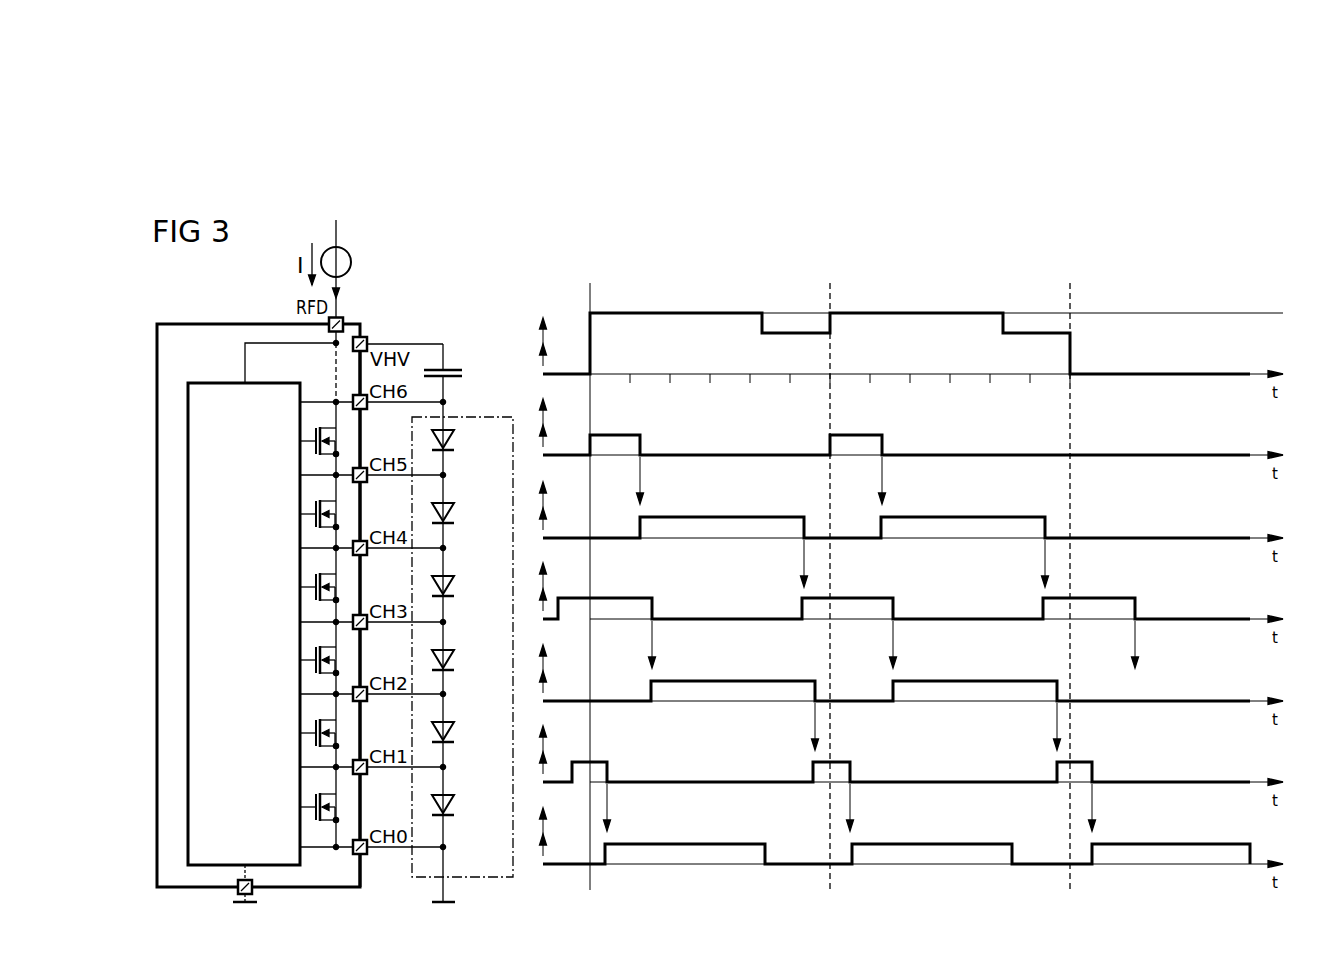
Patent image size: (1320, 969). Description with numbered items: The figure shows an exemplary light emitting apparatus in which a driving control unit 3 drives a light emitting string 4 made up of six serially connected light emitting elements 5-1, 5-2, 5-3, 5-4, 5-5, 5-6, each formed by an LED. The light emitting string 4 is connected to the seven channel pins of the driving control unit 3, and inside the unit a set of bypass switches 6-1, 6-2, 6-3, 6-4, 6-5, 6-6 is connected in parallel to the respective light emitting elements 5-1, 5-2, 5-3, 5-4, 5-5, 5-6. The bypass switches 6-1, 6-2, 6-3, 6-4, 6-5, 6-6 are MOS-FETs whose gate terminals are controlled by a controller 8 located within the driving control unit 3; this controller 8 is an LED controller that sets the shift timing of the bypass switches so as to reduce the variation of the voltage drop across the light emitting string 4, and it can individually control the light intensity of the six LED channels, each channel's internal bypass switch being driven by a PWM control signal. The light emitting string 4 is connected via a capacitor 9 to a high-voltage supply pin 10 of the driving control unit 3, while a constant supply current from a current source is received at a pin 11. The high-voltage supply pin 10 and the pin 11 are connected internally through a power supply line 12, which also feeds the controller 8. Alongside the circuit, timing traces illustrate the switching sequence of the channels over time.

The driving control unit 3 is at (205, 323).
The light emitting string 4 is at (495, 417).
The controller 8 is at (216, 383).
The capacitor 9 is at (447, 369).
The high-voltage supply pin 10 is at (370, 340).
The pin 11 is at (346, 318).
The power supply line 12 is at (263, 343).
The light emitting element 5-1 is at (452, 805).
The light emitting element 5-2 is at (452, 732).
The light emitting element 5-3 is at (452, 660).
The light emitting element 5-4 is at (452, 586).
The light emitting element 5-5 is at (452, 513).
The light emitting element 5-6 is at (452, 440).
The bypass switch 6-1 is at (300, 807).
The bypass switch 6-2 is at (300, 733).
The bypass switch 6-3 is at (300, 660).
The bypass switch 6-4 is at (300, 587).
The bypass switch 6-5 is at (300, 514).
The bypass switch 6-6 is at (300, 441).